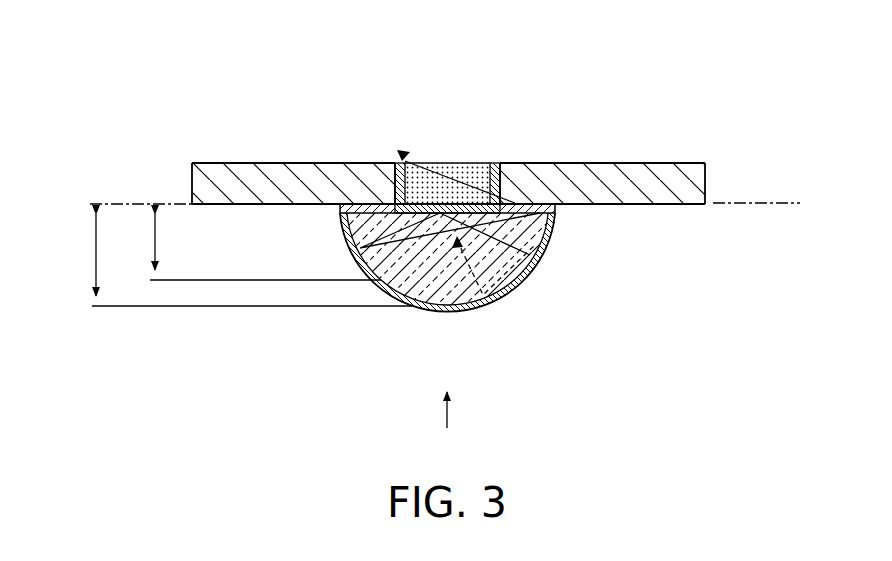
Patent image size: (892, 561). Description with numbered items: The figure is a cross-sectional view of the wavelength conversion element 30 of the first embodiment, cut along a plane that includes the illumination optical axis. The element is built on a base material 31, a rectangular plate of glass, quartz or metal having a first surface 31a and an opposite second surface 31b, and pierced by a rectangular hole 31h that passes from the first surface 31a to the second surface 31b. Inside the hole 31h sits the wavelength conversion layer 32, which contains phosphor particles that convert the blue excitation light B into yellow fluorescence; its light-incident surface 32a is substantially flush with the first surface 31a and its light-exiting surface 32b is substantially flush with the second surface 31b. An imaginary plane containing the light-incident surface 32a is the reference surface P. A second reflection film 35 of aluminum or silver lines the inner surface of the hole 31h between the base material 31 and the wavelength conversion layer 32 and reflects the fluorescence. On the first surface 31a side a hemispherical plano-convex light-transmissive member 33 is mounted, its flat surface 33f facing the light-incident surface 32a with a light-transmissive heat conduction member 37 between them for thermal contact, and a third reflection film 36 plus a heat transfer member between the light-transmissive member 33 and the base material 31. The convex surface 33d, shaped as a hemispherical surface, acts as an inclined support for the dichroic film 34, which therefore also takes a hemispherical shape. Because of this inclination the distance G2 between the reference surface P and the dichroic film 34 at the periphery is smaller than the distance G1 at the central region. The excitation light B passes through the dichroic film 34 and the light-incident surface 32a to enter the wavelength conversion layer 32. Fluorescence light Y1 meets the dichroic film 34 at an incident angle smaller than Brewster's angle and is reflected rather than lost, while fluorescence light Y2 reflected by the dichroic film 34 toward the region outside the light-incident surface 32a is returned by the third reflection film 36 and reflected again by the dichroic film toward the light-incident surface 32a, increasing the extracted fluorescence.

The wavelength conversion element 30 is at (318, 84).
The base material 31 is at (600, 172).
The first surface 31a is at (673, 205).
The second surface 31b is at (663, 163).
The hole 31h is at (489, 150).
The wavelength conversion layer 32 is at (478, 162).
The light-incident surface 32a is at (450, 215).
The light-exiting surface 32b is at (457, 162).
The light-transmissive member 33 is at (423, 305).
The convex surface 33d is at (470, 310).
The flat surface 33f is at (552, 204).
The dichroic film 34 is at (536, 262).
The second reflection film 35 is at (520, 163).
The third reflection film 36 is at (362, 210).
The heat conduction member 37 is at (403, 215).
The fluorescence light Y1 is at (401, 153).
The fluorescence light Y2 is at (520, 262).
The reference surface P is at (760, 203).
The excitation light B is at (447, 410).
The distance G1 is at (237, 255).
The distance G2 is at (251, 247).